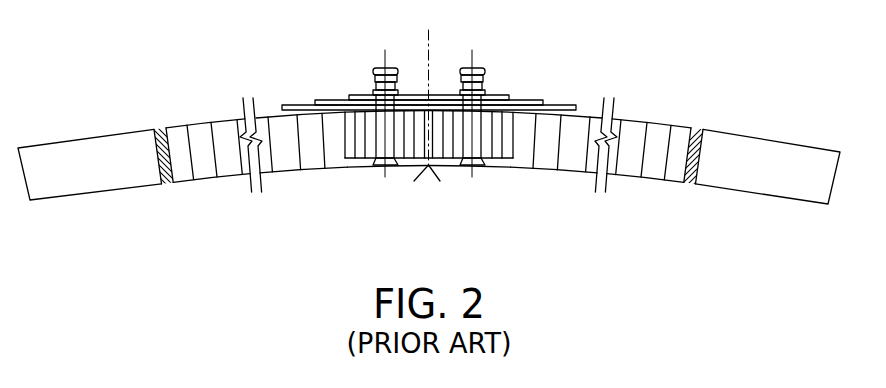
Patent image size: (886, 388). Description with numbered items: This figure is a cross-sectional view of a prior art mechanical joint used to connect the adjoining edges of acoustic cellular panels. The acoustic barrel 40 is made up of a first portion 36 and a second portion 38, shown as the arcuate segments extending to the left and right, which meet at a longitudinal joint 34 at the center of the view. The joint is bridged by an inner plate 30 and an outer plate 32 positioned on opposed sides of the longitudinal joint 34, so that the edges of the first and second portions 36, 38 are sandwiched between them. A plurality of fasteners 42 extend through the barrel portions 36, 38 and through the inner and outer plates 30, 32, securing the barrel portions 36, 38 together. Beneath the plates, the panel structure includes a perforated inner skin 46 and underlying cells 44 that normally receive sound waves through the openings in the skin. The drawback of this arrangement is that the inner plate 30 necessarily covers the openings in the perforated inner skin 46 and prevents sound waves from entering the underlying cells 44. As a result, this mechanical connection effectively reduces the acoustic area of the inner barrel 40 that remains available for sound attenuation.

The inner plate 30 is at (413, 162).
The outer plate 32 is at (503, 95).
The longitudinal joint 34 is at (440, 181).
The first portion 36 is at (292, 107).
The second portion 38 is at (568, 110).
The acoustic barrel 40 is at (688, 128).
The fasteners 42 is at (377, 68).
The cells 44 is at (372, 140).
The perforated inner skin 46 is at (292, 172).